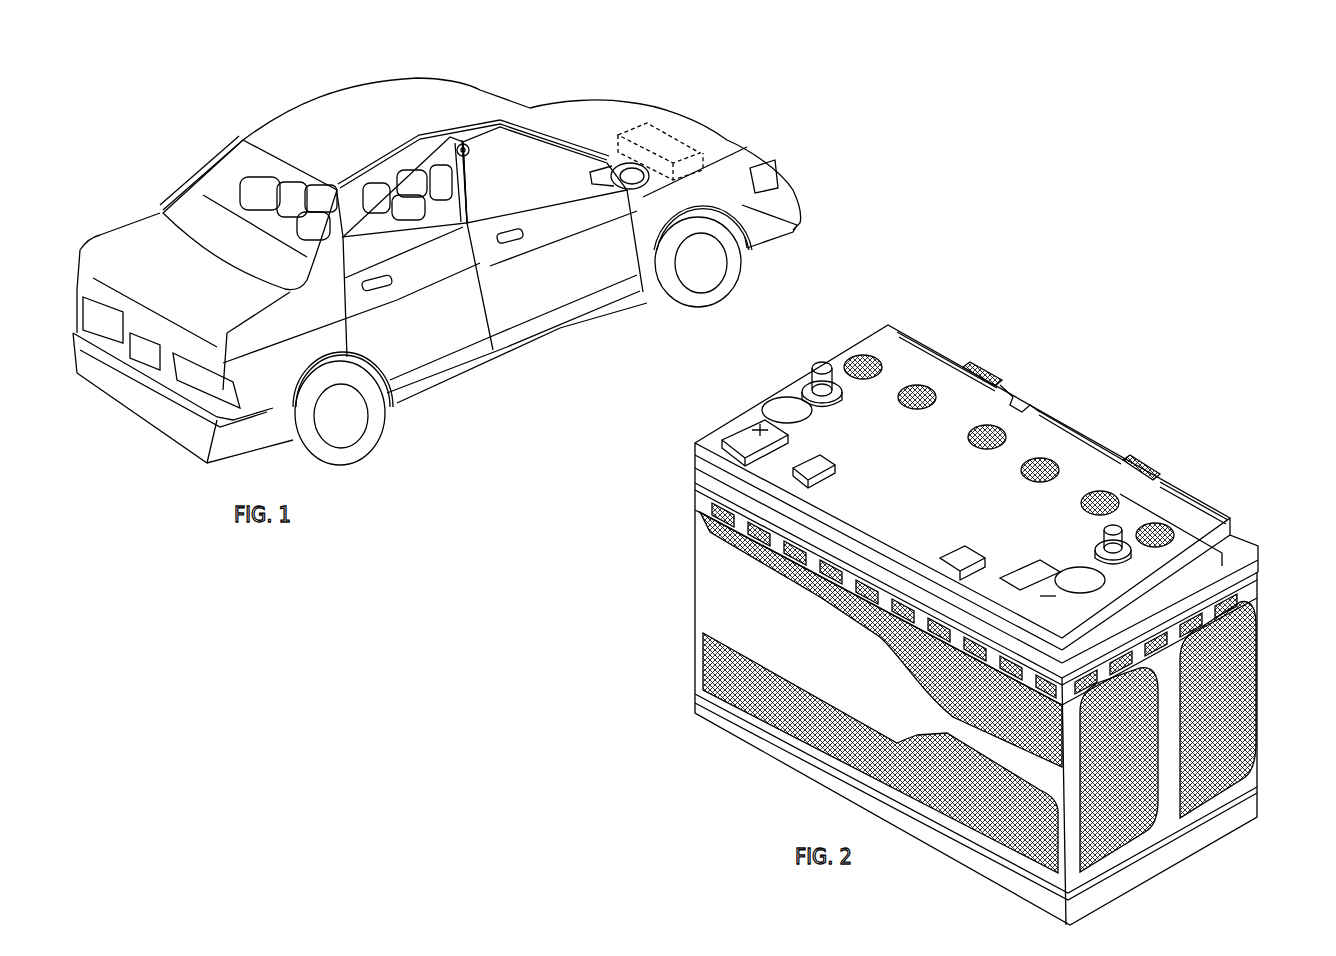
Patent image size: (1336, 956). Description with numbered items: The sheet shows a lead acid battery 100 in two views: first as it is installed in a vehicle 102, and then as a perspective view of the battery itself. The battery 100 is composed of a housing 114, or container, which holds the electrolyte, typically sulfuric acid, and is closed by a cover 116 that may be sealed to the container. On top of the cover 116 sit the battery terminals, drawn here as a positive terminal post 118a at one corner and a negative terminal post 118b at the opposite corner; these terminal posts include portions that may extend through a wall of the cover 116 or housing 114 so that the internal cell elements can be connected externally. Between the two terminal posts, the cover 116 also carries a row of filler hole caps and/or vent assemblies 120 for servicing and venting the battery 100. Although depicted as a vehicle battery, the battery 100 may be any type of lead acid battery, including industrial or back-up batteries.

In FIG. 1, the battery 100 is at (667, 137).
In FIG. 2, the battery 100 is at (1170, 727).
In FIG. 1, the vehicle 102 is at (267, 104).
In FIG. 2, the housing 114 is at (717, 583).
In FIG. 2, the cover 116 is at (933, 447).
In FIG. 2, the positive terminal post 118a is at (820, 362).
In FIG. 2, the negative terminal post 118b is at (1113, 537).
In FIG. 2, the filler hole caps and/or vent assemblies 120 is at (1060, 458).